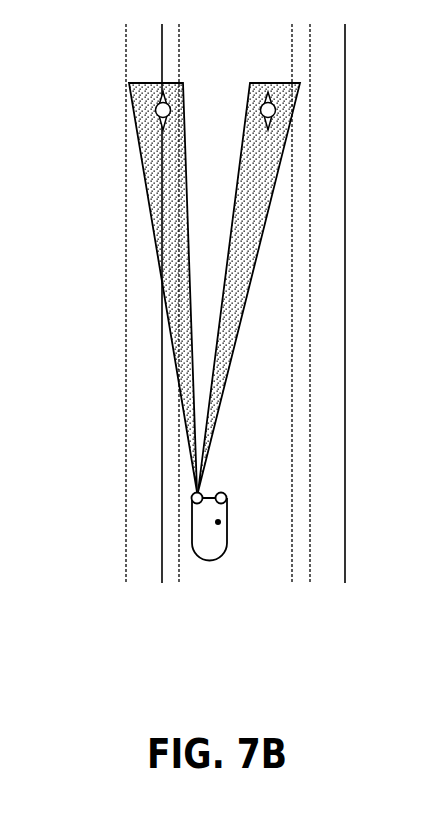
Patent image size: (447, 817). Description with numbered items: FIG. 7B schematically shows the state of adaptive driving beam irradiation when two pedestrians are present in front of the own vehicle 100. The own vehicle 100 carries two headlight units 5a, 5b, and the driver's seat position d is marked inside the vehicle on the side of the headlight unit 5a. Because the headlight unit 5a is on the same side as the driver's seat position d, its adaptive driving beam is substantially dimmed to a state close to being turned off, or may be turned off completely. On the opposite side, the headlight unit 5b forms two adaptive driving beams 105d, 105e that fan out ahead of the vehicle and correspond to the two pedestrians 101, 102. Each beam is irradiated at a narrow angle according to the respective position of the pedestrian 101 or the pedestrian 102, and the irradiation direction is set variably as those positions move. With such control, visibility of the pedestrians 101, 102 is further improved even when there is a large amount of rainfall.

The own vehicle 100 is at (213, 548).
The headlight unit 5a is at (227, 498).
The headlight unit 5b is at (191, 498).
The adaptive driving beam 105d is at (152, 193).
The adaptive driving beam 105e is at (269, 207).
The pedestrian 101 is at (157, 110).
The pedestrian 102 is at (274, 108).
The driver's seat position d is at (221, 525).